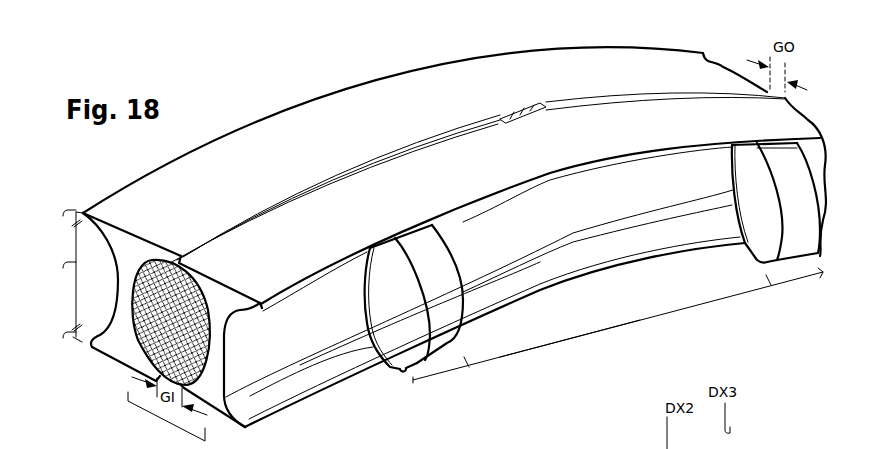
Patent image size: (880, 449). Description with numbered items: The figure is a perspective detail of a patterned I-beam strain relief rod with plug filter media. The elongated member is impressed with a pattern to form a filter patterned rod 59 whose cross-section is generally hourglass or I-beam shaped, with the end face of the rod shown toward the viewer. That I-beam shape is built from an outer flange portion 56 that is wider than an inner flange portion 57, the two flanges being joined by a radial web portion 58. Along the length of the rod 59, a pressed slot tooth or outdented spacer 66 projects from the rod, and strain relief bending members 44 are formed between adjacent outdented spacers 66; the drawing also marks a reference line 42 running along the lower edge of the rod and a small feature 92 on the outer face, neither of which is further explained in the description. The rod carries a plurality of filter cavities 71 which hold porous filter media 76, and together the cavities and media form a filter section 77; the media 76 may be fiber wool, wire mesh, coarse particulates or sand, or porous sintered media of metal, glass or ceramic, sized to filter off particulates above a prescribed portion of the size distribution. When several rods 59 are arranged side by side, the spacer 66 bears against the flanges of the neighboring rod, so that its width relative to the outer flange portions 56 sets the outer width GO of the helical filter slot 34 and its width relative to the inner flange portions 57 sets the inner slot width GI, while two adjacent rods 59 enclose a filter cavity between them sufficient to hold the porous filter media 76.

The helical filter slot 34 is at (172, 247).
The reference line 42 is at (438, 374).
The strain relief bending member 44 is at (578, 335).
The outer flange portion 56 is at (69, 273).
The inner flange portion 57 is at (68, 345).
The radial web portion 58 is at (68, 296).
The filter patterned rod 59 is at (107, 349).
The outdented spacer 66 is at (408, 370).
The filter cavity 71 is at (308, 349).
The porous filter media 76 is at (203, 387).
The filter section 77 is at (162, 417).
The slot 92 is at (522, 107).